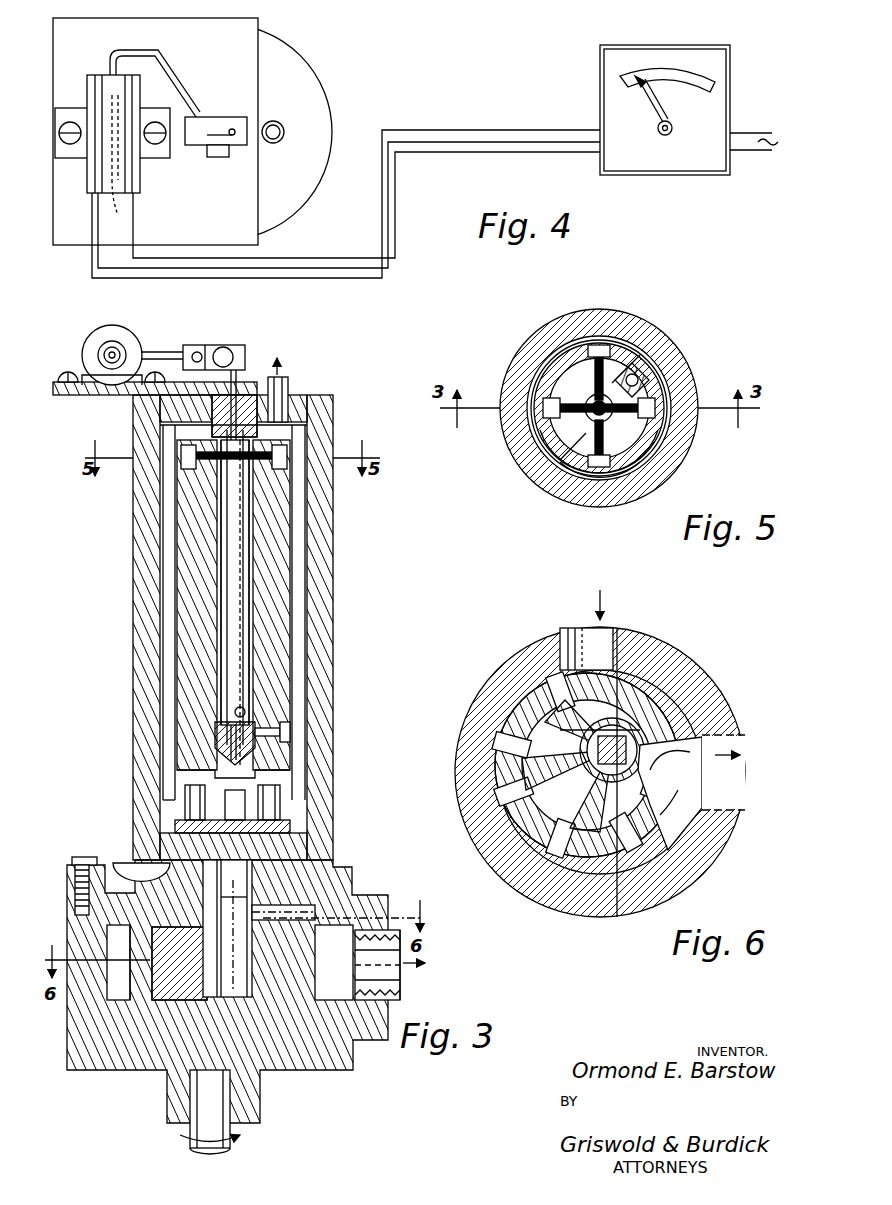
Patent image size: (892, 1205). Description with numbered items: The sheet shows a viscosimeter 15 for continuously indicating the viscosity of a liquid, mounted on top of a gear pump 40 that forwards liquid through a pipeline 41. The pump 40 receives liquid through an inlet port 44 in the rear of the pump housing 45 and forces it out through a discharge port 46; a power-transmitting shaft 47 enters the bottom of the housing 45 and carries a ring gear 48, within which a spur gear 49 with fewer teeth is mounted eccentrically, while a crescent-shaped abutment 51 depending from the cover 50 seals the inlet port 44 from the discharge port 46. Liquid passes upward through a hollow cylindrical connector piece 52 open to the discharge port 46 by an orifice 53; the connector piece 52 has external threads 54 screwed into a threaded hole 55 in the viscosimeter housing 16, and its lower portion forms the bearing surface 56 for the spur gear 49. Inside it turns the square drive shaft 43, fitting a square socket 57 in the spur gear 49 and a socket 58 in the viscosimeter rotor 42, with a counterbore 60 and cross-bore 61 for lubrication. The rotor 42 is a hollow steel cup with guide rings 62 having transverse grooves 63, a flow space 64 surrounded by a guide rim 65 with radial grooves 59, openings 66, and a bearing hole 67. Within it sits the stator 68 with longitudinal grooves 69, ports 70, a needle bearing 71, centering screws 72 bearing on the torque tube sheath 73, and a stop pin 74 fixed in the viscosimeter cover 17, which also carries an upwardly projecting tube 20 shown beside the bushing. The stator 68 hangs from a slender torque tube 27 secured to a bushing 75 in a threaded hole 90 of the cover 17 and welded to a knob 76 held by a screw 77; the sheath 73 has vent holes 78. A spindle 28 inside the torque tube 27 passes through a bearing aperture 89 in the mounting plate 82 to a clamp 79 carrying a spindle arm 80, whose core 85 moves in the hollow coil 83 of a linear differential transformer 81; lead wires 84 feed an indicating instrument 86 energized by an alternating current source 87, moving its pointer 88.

In FIG. 3, the viscosimeter 15 is at (345, 600).
In FIG. 3, the viscosimeter housing 16 is at (320, 640).
In FIG. 5, the viscosimeter housing 16 is at (672, 362).
In FIG. 4, the viscosimeter cover 17 is at (300, 92).
In FIG. 3, the viscosimeter cover 17 is at (322, 400).
In FIG. 4, the vent tube 20 is at (274, 121).
In FIG. 3, the vent tube 20 is at (290, 382).
In FIG. 3, the torque tube 27 is at (240, 505).
In FIG. 5, the torque tube 27 is at (590, 425).
In FIG. 4, the spindle 28 is at (235, 135).
In FIG. 3, the spindle 28 is at (248, 540).
In FIG. 5, the spindle 28 is at (598, 412).
In FIG. 3, the gear pump 40 is at (70, 940).
In FIG. 3, the pipeline 41 is at (400, 993).
In FIG. 3, the viscosimeter rotor 42 is at (298, 660).
In FIG. 5, the viscosimeter rotor 42 is at (562, 345).
In FIG. 3, the viscosimeter drive shaft 43 is at (256, 902).
In FIG. 6, the viscosimeter drive shaft 43 is at (600, 752).
In FIG. 3, the inlet port 44 is at (335, 1070).
In FIG. 6, the inlet port 44 is at (588, 648).
In FIG. 3, the pump housing 45 is at (300, 1070).
In FIG. 6, the pump housing 45 is at (700, 672).
In FIG. 3, the discharge port 46 is at (395, 968).
In FIG. 6, the discharge port 46 is at (745, 775).
In FIG. 3, the power-transmitting shaft 47 is at (205, 1100).
In FIG. 3, the ring gear 48 is at (118, 985).
In FIG. 6, the ring gear 48 is at (520, 722).
In FIG. 3, the spur gear 49 is at (172, 980).
In FIG. 6, the spur gear 49 is at (545, 705).
In FIG. 3, the cover 50 is at (72, 870).
In FIG. 3, the crescent-shaped abutment 51 is at (140, 1010).
In FIG. 6, the crescent-shaped abutment 51 is at (530, 785).
In FIG. 3, the connector piece 52 is at (252, 895).
In FIG. 6, the connector piece 52 is at (620, 740).
In FIG. 3, the orifice 53 is at (258, 915).
In FIG. 6, the orifice 53 is at (630, 758).
In FIG. 3, the external threads 54 is at (300, 850).
In FIG. 3, the threaded hole 55 is at (292, 846).
In FIG. 3, the bearing surface 56 is at (343, 975).
In FIG. 3, the square socket 57 is at (238, 1000).
In FIG. 3, the socket 58 is at (270, 800).
In FIG. 3, the radial grooves 59 is at (180, 838).
In FIG. 3, the counterbore 60 is at (272, 826).
In FIG. 3, the cross-bore 61 is at (242, 810).
In FIG. 3, the guide rings 62 is at (183, 460).
In FIG. 5, the guide rings 62 is at (573, 445).
In FIG. 5, the transverse grooves 63 is at (595, 475).
In FIG. 3, the flow space 64 is at (176, 826).
In FIG. 3, the guide rim 65 is at (150, 868).
In FIG. 3, the openings 66 is at (165, 790).
In FIG. 3, the bearing hole 67 is at (192, 800).
In FIG. 3, the stator 68 is at (190, 620).
In FIG. 5, the stator 68 is at (552, 355).
In FIG. 5, the longitudinal grooves 69 is at (612, 385).
In FIG. 3, the port 70 is at (236, 710).
In FIG. 3, the needle bearing 71 is at (225, 745).
In FIG. 3, the screws 72 is at (280, 455).
In FIG. 5, the screws 72 is at (600, 345).
In FIG. 3, the torque tube sheath 73 is at (222, 560).
In FIG. 5, the torque tube sheath 73 is at (625, 470).
In FIG. 3, the stop pin 74 is at (278, 448).
In FIG. 5, the stop pin 74 is at (642, 384).
In FIG. 3, the bushing 75 is at (165, 430).
In FIG. 3, the knob 76 is at (262, 735).
In FIG. 3, the screw 77 is at (288, 732).
In FIG. 3, the vent holes 78 is at (215, 470).
In FIG. 4, the clamp 79 is at (220, 118).
In FIG. 3, the clamp 79 is at (236, 352).
In FIG. 4, the spindle arm 80 is at (116, 54).
In FIG. 3, the spindle arm 80 is at (160, 350).
In FIG. 4, the linear differential transformer 81 is at (76, 82).
In FIG. 3, the linear differential transformer 81 is at (130, 328).
In FIG. 4, the mounting plate 82 is at (258, 28).
In FIG. 3, the mounting plate 82 is at (188, 344).
In FIG. 4, the hollow coil 83 is at (93, 175).
In FIG. 3, the hollow coil 83 is at (112, 345).
In FIG. 4, the lead wires 84 is at (158, 283).
In FIG. 3, the lead wires 84 is at (100, 356).
In FIG. 4, the core 85 is at (112, 203).
In FIG. 3, the core 85 is at (105, 350).
In FIG. 4, the indicating instrument 86 is at (698, 190).
In FIG. 4, the alternating current source 87 is at (778, 148).
In FIG. 4, the pointer 88 is at (632, 78).
In FIG. 3, the bearing aperture 89 is at (240, 390).
In FIG. 3, the threaded hole 90 is at (212, 410).